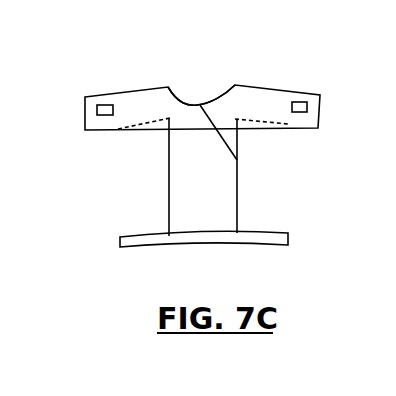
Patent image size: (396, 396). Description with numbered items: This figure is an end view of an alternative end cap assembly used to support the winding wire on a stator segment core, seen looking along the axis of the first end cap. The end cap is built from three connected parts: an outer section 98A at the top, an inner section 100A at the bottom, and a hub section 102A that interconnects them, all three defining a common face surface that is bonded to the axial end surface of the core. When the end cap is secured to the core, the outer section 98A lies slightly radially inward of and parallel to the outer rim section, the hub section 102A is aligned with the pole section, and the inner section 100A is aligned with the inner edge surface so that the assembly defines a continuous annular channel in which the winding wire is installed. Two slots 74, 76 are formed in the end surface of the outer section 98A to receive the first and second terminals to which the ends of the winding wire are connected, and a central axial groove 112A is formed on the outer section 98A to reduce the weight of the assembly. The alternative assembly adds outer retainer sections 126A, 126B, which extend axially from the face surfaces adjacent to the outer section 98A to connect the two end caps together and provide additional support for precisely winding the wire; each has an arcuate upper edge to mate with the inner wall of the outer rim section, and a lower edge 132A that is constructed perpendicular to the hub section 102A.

The slot 74 is at (97, 111).
The slot 76 is at (303, 100).
The outer section 98A is at (322, 110).
The lower edge 132A is at (170, 120).
The outer retainer section 126A is at (153, 130).
The outer retainer section 126B is at (260, 128).
The central axial groove 112A is at (237, 160).
The hub section 102A is at (178, 190).
The inner section 100A is at (267, 232).